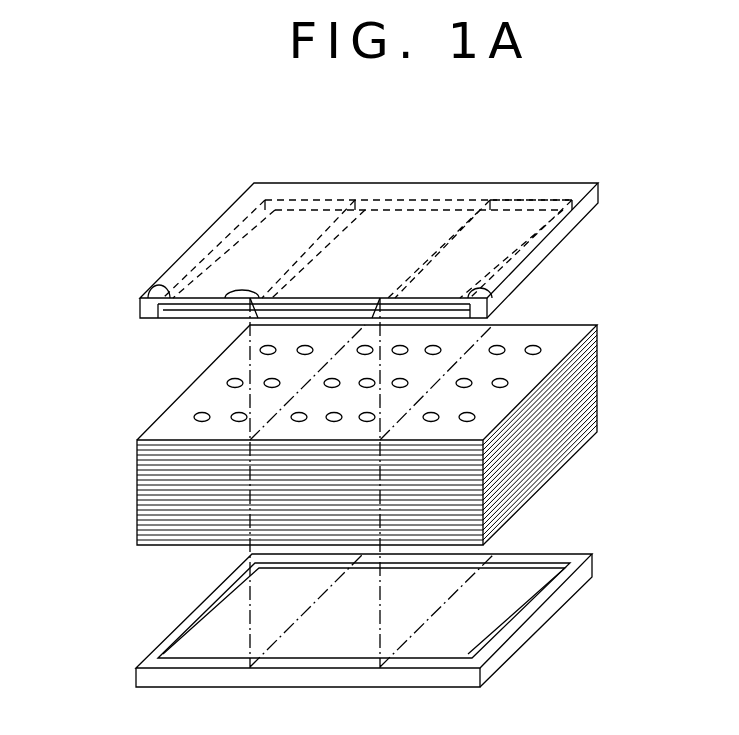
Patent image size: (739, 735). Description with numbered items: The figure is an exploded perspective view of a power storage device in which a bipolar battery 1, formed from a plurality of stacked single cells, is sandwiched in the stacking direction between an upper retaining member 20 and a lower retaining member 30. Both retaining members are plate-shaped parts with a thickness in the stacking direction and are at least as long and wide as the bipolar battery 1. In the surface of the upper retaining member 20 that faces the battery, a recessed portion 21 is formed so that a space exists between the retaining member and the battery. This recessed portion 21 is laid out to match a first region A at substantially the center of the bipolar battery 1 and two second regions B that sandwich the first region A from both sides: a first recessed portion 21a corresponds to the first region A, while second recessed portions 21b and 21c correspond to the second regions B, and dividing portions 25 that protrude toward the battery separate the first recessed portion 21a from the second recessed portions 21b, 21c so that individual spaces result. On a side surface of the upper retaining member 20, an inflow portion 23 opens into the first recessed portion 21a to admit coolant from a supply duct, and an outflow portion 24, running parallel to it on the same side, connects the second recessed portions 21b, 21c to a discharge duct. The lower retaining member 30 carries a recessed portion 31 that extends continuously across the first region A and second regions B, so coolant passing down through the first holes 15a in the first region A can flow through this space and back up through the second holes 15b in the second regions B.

The bipolar battery 1 is at (365, 440).
The first holes 15a is at (293, 418).
The second holes 15b is at (194, 417).
The upper retaining member 20 is at (600, 192).
The recessed portion 21 is at (379, 196).
The first recessed portion 21a is at (397, 225).
The second recessed portion 21b is at (290, 225).
The second recessed portion 21c is at (522, 222).
The inflow portion 23 is at (203, 310).
The outflow portion 24 is at (145, 297).
The dividing portions 25 is at (297, 270).
The lower retaining member 30 is at (404, 620).
The recessed portion (guide portion) 31 is at (495, 598).
The first region A is at (335, 435).
The second regions B is at (172, 430).